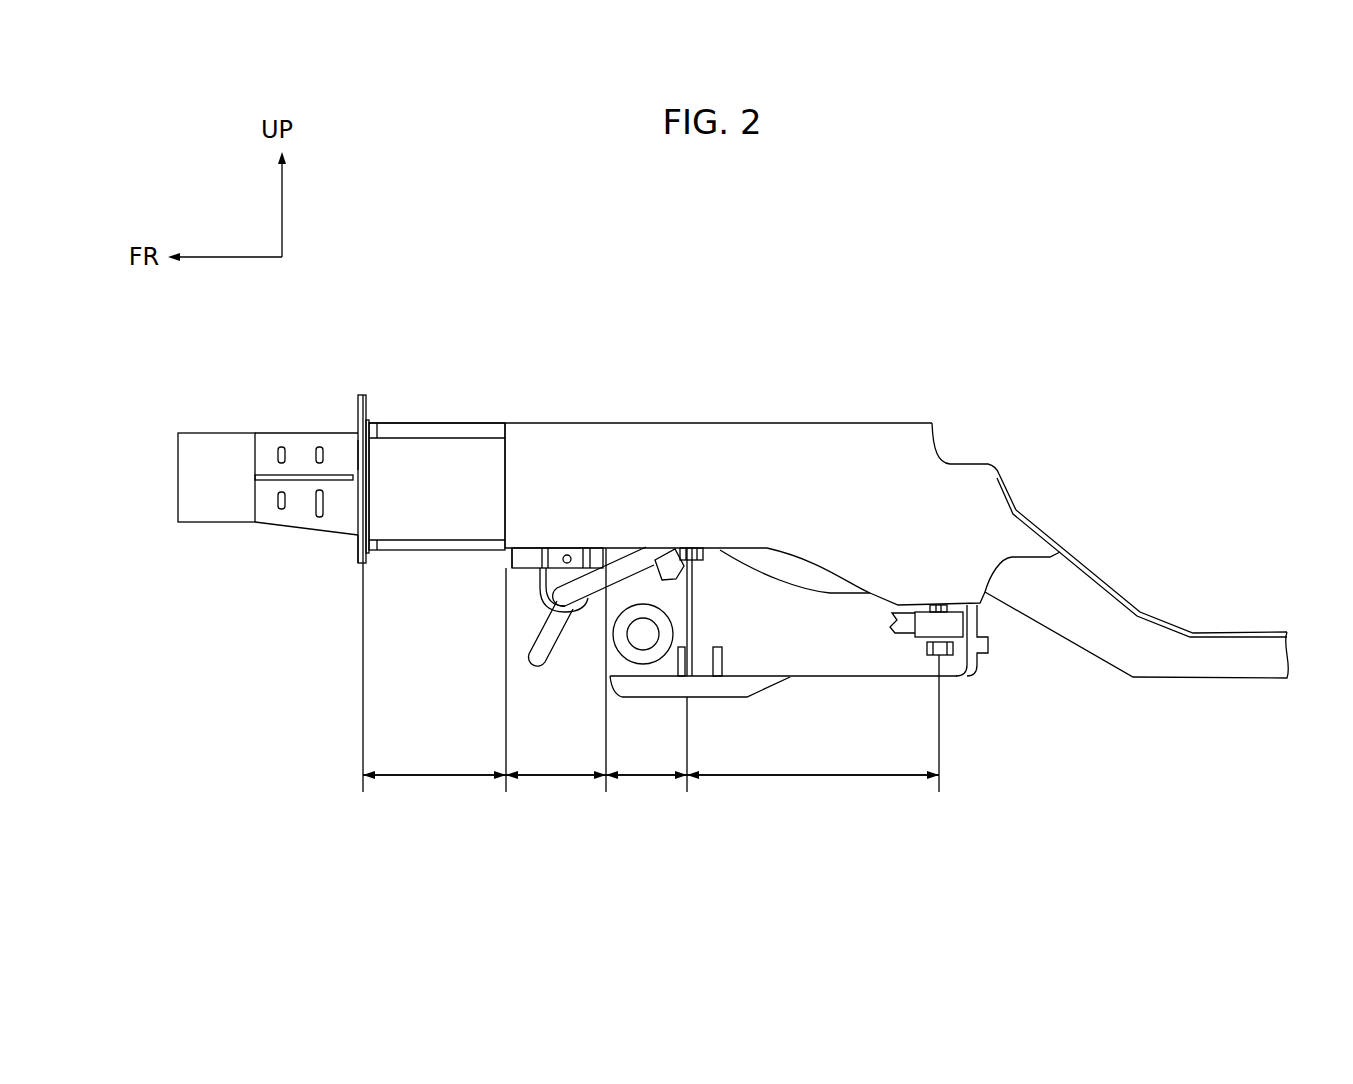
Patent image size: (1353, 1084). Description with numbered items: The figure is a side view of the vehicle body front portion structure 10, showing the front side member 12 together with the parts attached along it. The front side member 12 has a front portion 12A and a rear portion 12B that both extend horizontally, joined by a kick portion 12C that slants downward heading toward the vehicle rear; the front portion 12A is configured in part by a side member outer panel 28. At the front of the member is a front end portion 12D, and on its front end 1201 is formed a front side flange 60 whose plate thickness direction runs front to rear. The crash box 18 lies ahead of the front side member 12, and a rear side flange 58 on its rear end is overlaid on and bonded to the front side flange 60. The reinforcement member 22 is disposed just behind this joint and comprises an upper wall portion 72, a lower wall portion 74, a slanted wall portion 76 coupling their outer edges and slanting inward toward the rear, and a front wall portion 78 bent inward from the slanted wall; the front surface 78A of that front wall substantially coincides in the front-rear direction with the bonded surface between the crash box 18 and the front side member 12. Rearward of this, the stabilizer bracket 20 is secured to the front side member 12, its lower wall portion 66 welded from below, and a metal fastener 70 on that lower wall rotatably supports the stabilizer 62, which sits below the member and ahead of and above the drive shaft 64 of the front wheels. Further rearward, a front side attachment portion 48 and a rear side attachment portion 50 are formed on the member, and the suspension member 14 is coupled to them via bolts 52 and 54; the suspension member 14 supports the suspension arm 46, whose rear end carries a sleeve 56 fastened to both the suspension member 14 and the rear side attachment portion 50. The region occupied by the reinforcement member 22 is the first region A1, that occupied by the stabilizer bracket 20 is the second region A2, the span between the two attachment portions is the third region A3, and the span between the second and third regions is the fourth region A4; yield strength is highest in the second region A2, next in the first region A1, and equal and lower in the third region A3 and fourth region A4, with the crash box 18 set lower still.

The vehicle body front portion structure 10 is at (711, 301).
The front side member 12 is at (900, 506).
The front portion 12A is at (678, 423).
The rear portion 12B is at (1258, 632).
The kick portion 12C is at (1100, 578).
The front end portion 12D is at (462, 425).
The front end 1201 is at (360, 458).
The suspension member 14 is at (836, 678).
The crash box 18 is at (230, 530).
The stabilizer bracket 20 is at (524, 609).
The reinforcement member 22 is at (450, 484).
The side member outer panel 28 is at (598, 455).
The suspension arm 46 is at (907, 635).
The front side attachment portion 48 is at (705, 557).
The rear side attachment portion 50 is at (962, 618).
The bolt 52 is at (723, 557).
The bolt 54 is at (953, 655).
The sleeve 56 is at (986, 652).
The rear side flange 58 is at (358, 410).
The front side flange 60 is at (370, 408).
The stabilizer 62 is at (634, 639).
The drive shaft 64 is at (644, 666).
The lower wall portion 66 is at (512, 565).
The metal fastener 70 is at (541, 600).
The upper wall portion 72 is at (480, 430).
The lower wall portion 74 is at (468, 540).
The slanted wall portion 76 is at (415, 465).
The front wall portion 78 is at (358, 500).
The front surface 78A is at (358, 563).
The first region A1 is at (440, 779).
The second region A2 is at (562, 779).
The third region A3 is at (812, 779).
The fourth region A4 is at (652, 779).